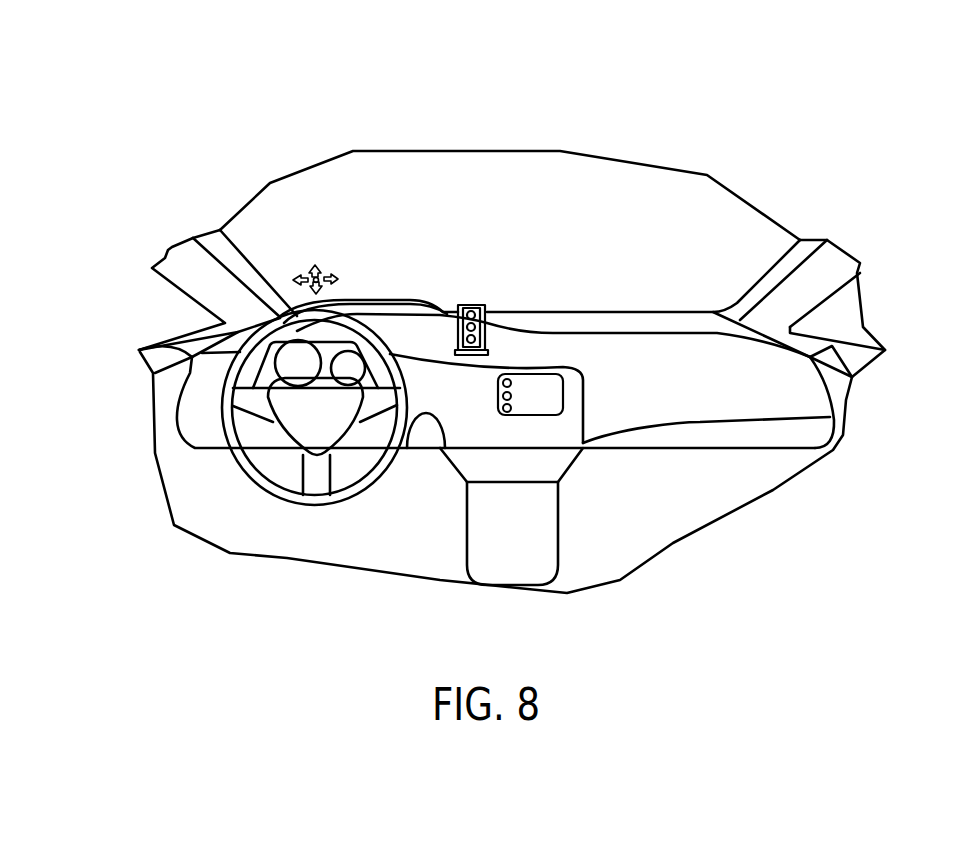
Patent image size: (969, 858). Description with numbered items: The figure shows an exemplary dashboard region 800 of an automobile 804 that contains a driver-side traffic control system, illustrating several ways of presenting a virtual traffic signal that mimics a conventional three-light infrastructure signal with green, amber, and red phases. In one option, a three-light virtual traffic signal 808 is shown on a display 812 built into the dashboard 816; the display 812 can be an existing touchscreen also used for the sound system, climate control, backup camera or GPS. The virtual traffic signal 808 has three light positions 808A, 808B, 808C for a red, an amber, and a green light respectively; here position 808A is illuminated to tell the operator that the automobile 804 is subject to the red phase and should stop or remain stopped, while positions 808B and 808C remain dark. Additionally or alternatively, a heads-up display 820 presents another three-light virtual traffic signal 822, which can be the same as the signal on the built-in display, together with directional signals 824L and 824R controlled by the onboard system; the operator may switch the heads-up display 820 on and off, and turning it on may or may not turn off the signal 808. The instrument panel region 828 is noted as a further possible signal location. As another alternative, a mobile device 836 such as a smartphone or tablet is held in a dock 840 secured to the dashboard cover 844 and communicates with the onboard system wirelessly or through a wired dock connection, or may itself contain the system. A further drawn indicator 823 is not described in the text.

The dashboard region 800 is at (770, 116).
The automobile 804 is at (148, 322).
The three-light virtual traffic signal 808 is at (565, 392).
The light position 808A is at (497, 384).
The light position 808B is at (497, 396).
The light position 808C is at (499, 413).
The display 812 is at (572, 425).
The dashboard 816 is at (423, 442).
The heads-up display (HUD) 820 is at (303, 228).
The three-light virtual traffic signal 822 is at (340, 238).
The traffic light indicator 823 is at (464, 288).
The directional signal 824L is at (303, 277).
The directional signal 824R is at (340, 279).
The instrument panel region 828 is at (272, 306).
The mobile device 836 is at (485, 304).
The dock 840 is at (487, 344).
The dashboard cover 844 is at (622, 328).